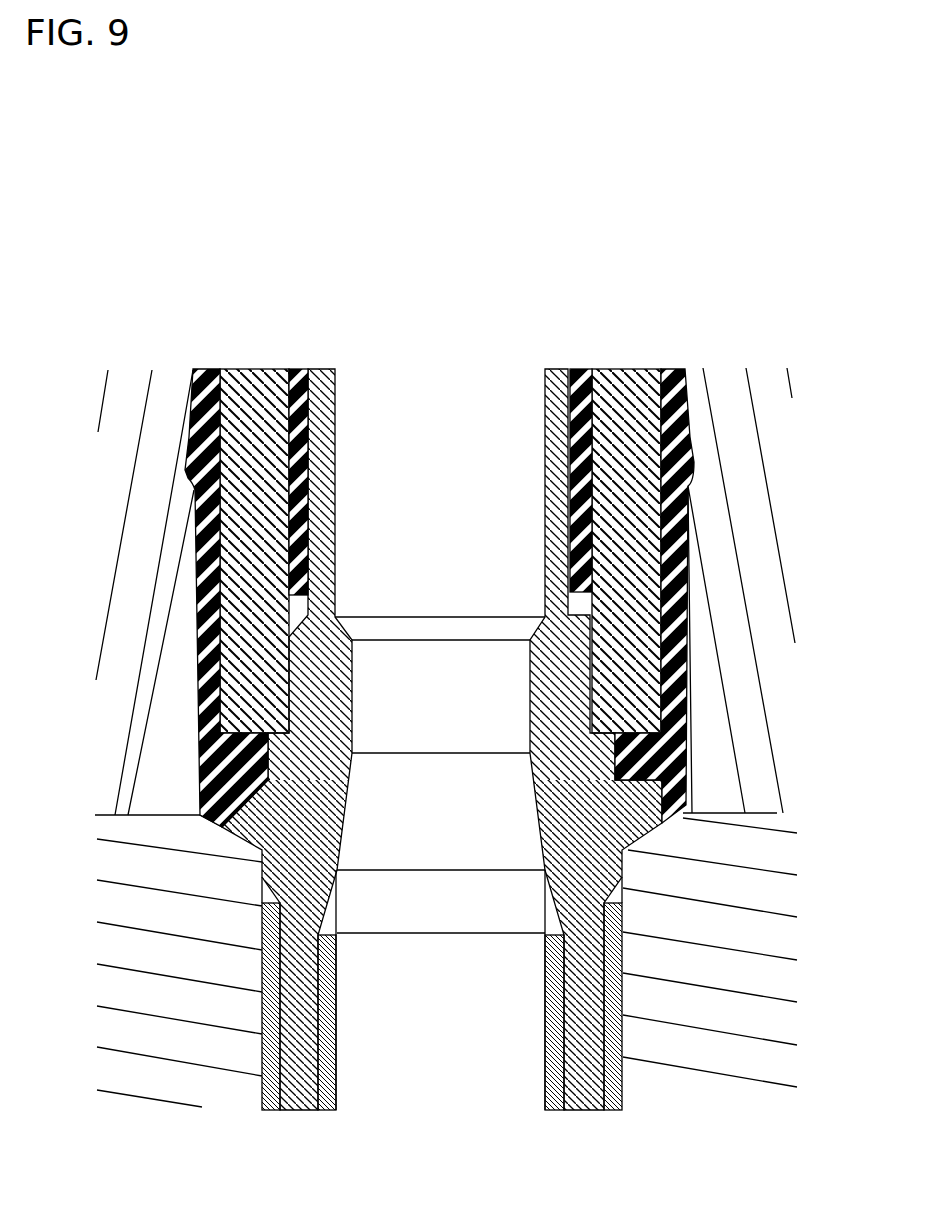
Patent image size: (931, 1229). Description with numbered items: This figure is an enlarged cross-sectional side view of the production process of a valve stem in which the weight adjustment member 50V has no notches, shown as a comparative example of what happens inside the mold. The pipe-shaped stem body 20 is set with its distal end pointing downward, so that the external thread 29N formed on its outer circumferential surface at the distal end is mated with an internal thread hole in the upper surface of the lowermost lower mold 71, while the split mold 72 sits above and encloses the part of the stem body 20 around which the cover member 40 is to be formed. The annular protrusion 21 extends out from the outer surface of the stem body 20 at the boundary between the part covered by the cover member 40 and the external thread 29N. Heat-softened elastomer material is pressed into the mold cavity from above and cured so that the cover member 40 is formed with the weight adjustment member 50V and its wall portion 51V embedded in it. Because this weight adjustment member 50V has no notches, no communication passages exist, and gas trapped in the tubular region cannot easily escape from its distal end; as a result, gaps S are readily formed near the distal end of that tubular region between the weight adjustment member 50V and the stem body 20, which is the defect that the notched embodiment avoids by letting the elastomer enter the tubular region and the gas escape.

The stem body 20 is at (320, 385).
The annular protrusion 21 is at (245, 818).
The external thread 29N is at (262, 965).
The cover member 40 is at (205, 415).
The seal layer 50V is at (232, 540).
The elastic member 51V is at (255, 688).
The lower mold 71 is at (693, 888).
The split mold 72 is at (755, 543).
The gap S is at (298, 612).